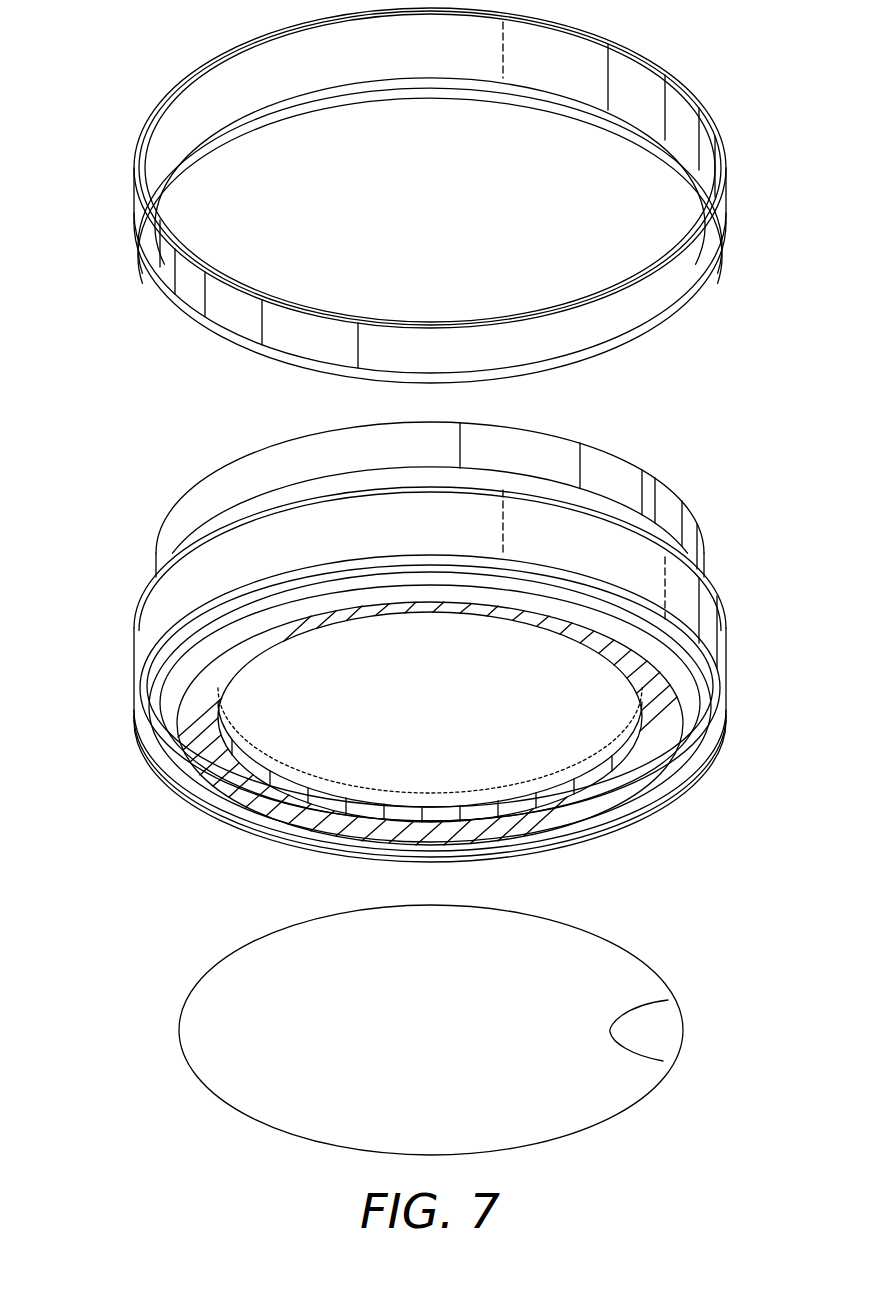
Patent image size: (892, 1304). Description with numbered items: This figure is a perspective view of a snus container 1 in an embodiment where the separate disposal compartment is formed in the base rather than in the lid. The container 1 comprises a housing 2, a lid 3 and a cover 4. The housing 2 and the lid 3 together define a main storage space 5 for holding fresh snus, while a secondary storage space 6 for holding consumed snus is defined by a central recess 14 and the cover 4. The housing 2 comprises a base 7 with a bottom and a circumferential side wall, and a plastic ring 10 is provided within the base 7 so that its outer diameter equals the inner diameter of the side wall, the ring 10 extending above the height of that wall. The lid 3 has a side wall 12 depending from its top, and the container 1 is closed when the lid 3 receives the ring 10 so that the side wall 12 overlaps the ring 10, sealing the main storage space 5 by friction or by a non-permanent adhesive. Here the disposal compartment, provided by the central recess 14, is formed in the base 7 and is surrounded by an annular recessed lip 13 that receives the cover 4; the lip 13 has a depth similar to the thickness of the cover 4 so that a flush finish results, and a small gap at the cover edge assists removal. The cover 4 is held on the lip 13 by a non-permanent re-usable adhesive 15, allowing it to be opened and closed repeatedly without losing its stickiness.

The container 1 is at (140, 40).
The housing 2 is at (133, 640).
The lid 3 is at (134, 157).
The cover 4 is at (284, 1124).
The main storage space 5 is at (250, 275).
The secondary storage space 6 is at (578, 755).
The base 7 is at (724, 617).
The ring 10 is at (155, 556).
The side wall 12 is at (133, 212).
The annular recessed lip 13 is at (205, 783).
The central recess 14 is at (265, 800).
The non-permanent re-usable adhesive 15 is at (658, 737).